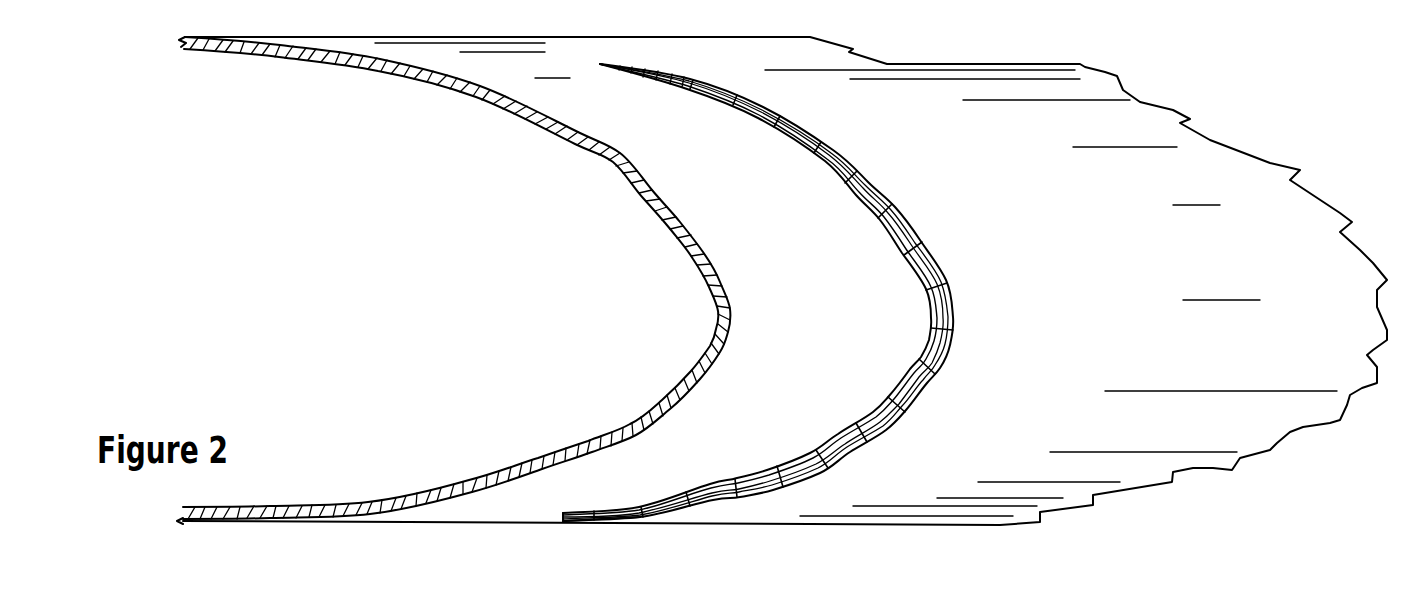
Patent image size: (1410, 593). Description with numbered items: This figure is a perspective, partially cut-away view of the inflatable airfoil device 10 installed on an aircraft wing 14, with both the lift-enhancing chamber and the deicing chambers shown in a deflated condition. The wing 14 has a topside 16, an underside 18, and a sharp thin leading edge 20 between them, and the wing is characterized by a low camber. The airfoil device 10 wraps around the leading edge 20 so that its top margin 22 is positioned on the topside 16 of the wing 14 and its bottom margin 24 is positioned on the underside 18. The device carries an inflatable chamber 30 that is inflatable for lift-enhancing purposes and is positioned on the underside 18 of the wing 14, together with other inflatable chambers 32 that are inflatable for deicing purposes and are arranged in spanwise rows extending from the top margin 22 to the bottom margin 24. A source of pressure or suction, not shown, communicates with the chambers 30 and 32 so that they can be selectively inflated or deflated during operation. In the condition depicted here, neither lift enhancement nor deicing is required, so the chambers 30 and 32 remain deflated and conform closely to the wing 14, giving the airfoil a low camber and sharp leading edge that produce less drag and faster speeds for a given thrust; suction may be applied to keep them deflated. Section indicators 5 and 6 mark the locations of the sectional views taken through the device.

The inflatable airfoil device 10 is at (1185, 103).
The wing 14 is at (492, 468).
The topside 16 is at (433, 50).
The underside 18 is at (333, 513).
The leading edge 20 is at (925, 285).
The top margin 22 is at (598, 64).
The bottom margin 24 is at (640, 518).
The lift-enhancing inflatable chamber 30 is at (908, 375).
The deicing inflatable chambers 32 is at (713, 93).
The section line 5- 5 is at (787, 435).
The section line 6- 6 is at (823, 193).